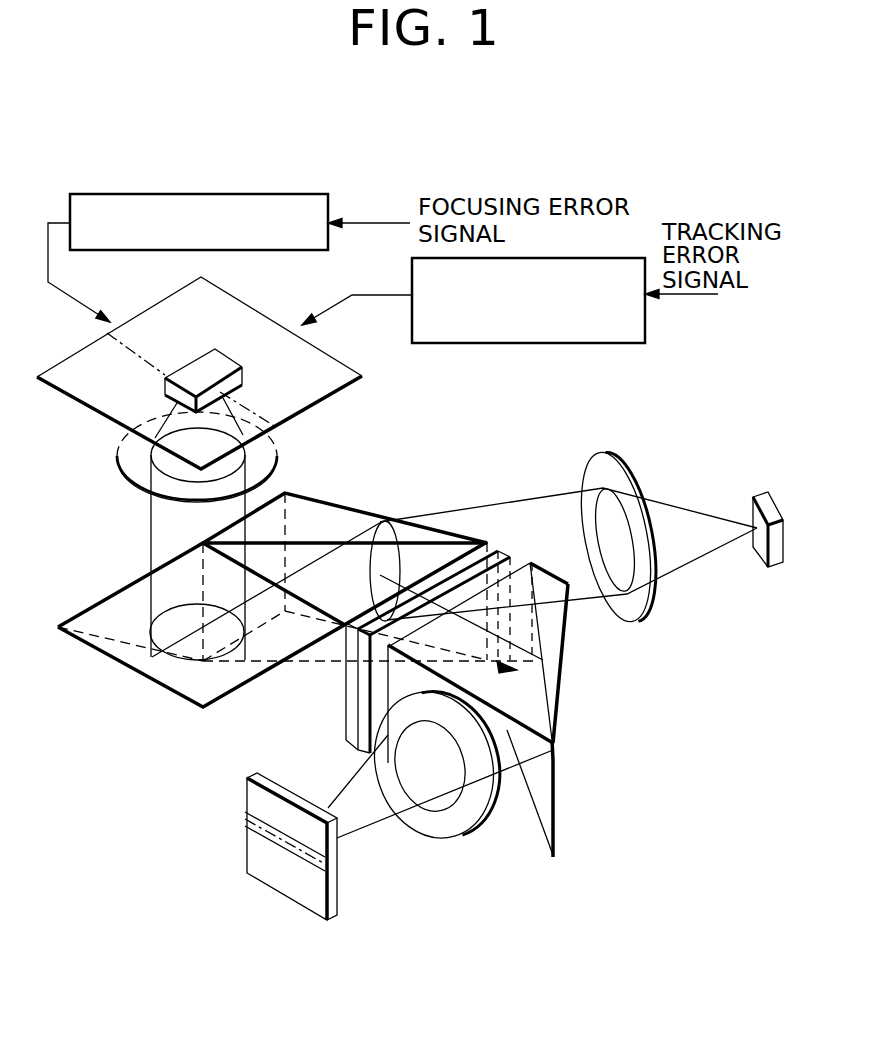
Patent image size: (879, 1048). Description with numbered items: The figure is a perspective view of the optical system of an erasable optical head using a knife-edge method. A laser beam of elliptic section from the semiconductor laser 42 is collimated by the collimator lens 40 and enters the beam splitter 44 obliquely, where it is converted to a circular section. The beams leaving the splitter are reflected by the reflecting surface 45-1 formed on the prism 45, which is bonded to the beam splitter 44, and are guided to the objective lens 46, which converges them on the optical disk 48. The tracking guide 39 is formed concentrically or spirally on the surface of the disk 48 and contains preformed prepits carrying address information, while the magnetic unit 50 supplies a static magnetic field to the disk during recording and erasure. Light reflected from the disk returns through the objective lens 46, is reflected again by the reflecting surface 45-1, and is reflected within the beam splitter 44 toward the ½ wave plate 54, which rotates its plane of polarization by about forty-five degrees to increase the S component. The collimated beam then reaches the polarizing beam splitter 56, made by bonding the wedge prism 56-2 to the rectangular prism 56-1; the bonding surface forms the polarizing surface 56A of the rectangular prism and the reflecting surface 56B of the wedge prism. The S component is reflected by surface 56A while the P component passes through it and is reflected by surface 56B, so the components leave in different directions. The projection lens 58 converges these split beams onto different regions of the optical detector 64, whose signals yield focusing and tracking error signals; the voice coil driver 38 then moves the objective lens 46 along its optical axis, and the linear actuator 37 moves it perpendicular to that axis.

The linear actuator 37 is at (525, 343).
The voice coil driver 38 is at (203, 194).
The tracking guide 39 is at (255, 413).
The collimator lens 40 is at (604, 466).
The semiconductor laser 42 is at (763, 495).
The beam splitter 44 is at (343, 512).
The prism 45 is at (107, 603).
The reflecting surface 45-1 is at (138, 662).
The objective lens 46 is at (268, 452).
The optical disk 48 is at (329, 359).
The magnetic unit 50 is at (196, 367).
The ½ wave plate 54 is at (505, 554).
The polarizing beam splitter 56 is at (552, 640).
The rectangular prism 56-1 is at (512, 820).
The wedge prism 56-2 is at (553, 667).
The polarizing surface 56A is at (548, 703).
The reflecting surface 56B is at (560, 743).
The projection lens 58 is at (433, 828).
The optical detector 64 is at (331, 903).